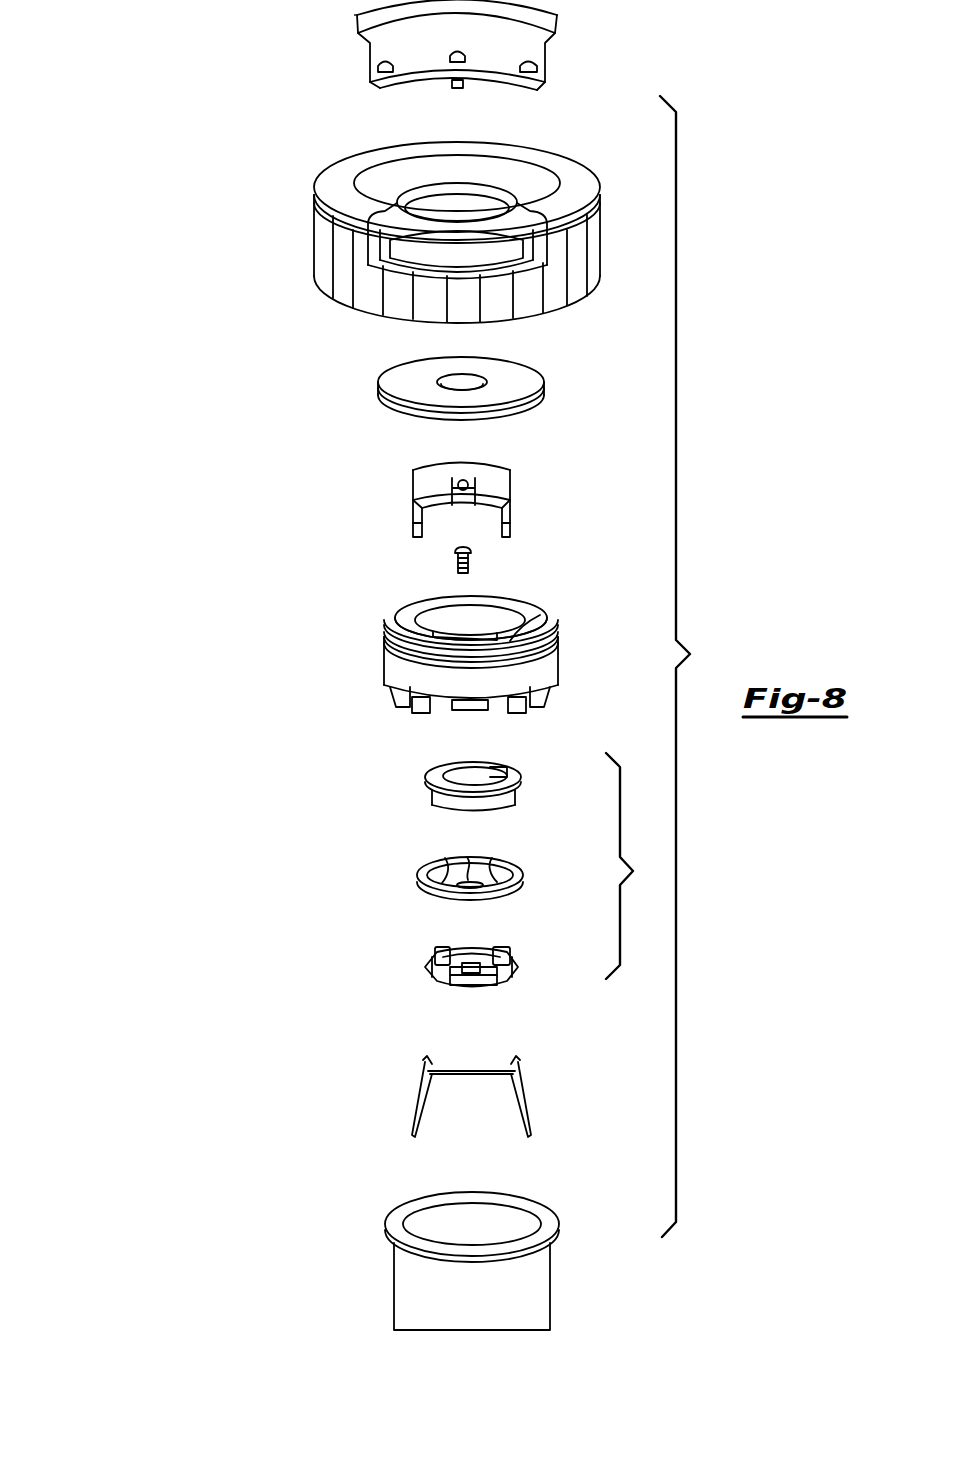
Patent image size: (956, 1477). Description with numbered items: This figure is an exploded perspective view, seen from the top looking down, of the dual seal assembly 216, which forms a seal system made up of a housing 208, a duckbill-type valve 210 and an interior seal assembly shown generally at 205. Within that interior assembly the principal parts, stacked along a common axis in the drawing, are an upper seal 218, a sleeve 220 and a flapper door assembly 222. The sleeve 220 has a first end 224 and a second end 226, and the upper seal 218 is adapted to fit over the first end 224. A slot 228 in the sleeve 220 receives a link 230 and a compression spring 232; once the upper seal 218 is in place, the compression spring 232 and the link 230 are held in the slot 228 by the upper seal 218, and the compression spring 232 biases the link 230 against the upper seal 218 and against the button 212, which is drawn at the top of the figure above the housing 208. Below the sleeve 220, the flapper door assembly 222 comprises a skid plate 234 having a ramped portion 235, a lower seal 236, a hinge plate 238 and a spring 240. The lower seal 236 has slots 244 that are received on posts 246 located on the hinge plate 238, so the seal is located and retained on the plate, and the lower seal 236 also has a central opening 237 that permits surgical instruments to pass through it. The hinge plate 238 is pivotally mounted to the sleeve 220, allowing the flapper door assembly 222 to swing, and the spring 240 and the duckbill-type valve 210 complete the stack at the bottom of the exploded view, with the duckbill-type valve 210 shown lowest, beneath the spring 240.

The dual seal assembly 216 is at (137, 98).
The interior seal assembly 205 is at (693, 666).
The flapper door assembly 222 is at (638, 866).
The button 212 is at (518, 52).
The housing 208 is at (278, 220).
The upper seal 218 is at (318, 397).
The link 230 is at (498, 488).
The compression spring 232 is at (472, 567).
The sleeve 220 is at (327, 660).
The slot 228 is at (503, 640).
The first end 224 is at (402, 607).
The second end 226 is at (405, 712).
The skid plate 234 is at (420, 782).
The ramped portion 235 is at (507, 770).
The lower seal 236 is at (418, 878).
The central opening 237 is at (467, 857).
The slots 244 is at (445, 858).
The hinge plate 238 is at (437, 982).
The posts 246 is at (440, 948).
The spring 240 is at (410, 1132).
The duckbill-type valve 210 is at (412, 1287).